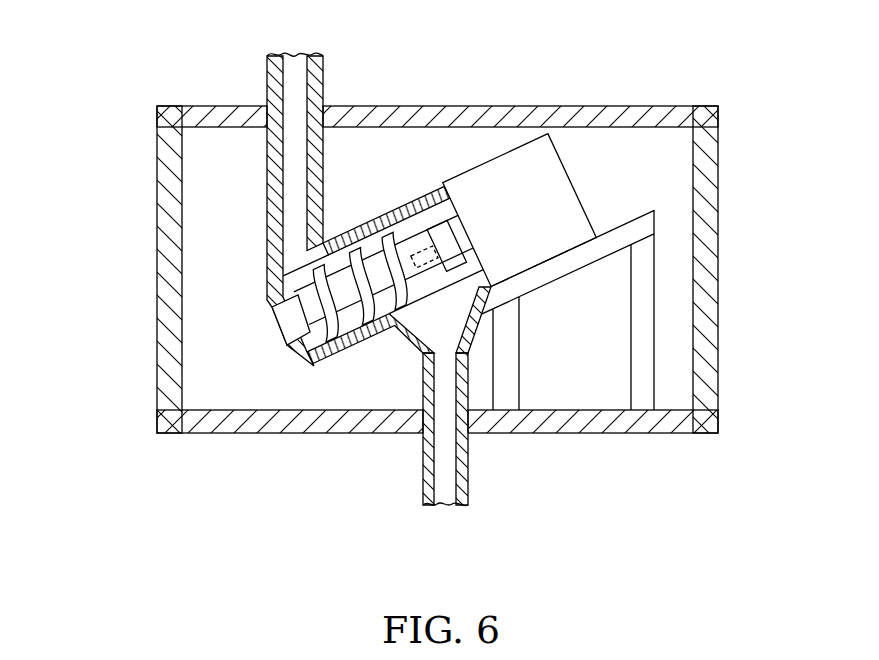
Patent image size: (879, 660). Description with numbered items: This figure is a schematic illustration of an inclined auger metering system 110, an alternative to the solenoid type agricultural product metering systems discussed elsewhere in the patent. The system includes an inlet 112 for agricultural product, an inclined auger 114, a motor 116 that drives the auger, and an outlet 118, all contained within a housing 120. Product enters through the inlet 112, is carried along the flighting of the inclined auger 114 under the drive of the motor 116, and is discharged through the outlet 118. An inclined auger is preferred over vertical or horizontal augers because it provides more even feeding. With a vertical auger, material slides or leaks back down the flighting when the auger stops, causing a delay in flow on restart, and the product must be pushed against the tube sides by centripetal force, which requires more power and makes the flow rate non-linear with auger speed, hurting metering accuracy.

The inclined auger metering system 110 is at (128, 294).
The inlet 112 is at (323, 73).
The inclined auger 114 is at (333, 357).
The motor 116 is at (571, 170).
The outlet 118 is at (423, 483).
The housing 120 is at (718, 262).